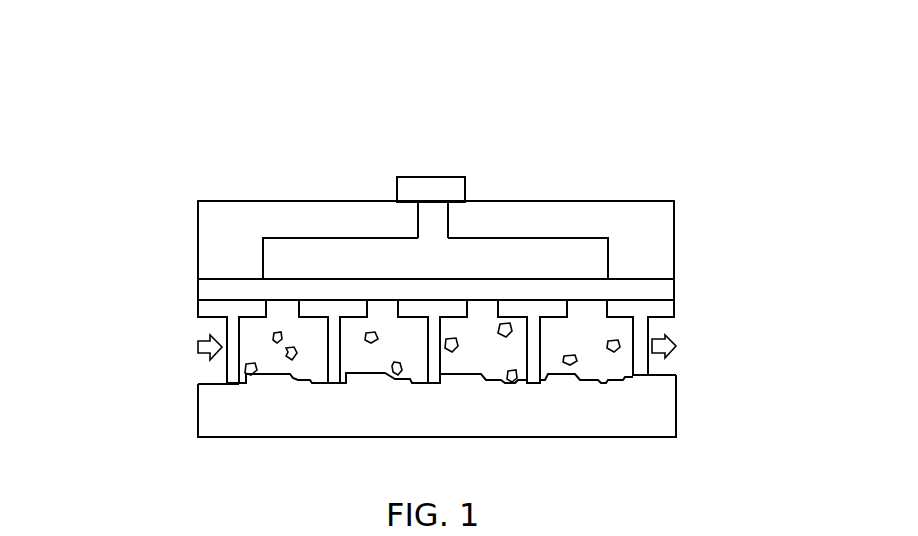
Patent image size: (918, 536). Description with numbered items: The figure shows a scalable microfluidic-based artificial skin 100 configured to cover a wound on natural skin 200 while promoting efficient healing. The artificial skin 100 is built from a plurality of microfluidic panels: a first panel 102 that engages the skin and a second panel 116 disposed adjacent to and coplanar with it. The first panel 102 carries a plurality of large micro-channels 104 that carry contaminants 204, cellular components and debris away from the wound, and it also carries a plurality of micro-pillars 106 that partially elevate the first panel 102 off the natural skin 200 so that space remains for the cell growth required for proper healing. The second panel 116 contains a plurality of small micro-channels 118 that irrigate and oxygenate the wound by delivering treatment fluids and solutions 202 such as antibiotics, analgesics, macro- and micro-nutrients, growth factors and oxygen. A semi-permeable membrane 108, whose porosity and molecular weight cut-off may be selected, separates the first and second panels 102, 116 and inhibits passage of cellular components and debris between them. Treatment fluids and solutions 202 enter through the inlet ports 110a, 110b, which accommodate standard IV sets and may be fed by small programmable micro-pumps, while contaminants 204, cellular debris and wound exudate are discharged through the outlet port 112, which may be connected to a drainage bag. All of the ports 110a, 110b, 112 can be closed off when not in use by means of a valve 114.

The artificial skin 100 is at (186, 67).
The first panel 102 is at (674, 232).
The large micro-channels 104 is at (592, 260).
The micro-pillars 106 is at (226, 333).
The semi-permeable membrane 108 is at (197, 290).
The inlet port 110a is at (442, 217).
The inlet port 110b is at (204, 384).
The outlet port 112 is at (677, 375).
The valve 114 is at (397, 190).
The second panel 116 is at (197, 310).
The small micro-channels 118 is at (610, 367).
The natural skin 200 is at (678, 425).
The treatment fluids and solutions 202 is at (197, 348).
The contaminants 204 is at (657, 336).